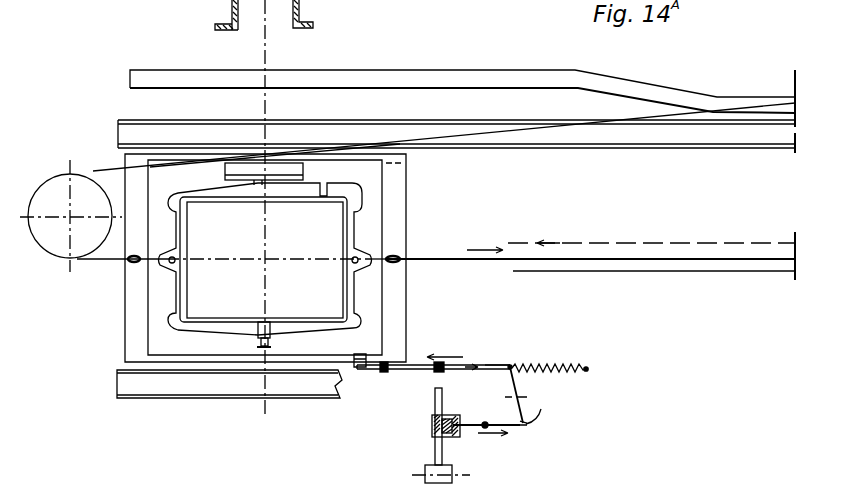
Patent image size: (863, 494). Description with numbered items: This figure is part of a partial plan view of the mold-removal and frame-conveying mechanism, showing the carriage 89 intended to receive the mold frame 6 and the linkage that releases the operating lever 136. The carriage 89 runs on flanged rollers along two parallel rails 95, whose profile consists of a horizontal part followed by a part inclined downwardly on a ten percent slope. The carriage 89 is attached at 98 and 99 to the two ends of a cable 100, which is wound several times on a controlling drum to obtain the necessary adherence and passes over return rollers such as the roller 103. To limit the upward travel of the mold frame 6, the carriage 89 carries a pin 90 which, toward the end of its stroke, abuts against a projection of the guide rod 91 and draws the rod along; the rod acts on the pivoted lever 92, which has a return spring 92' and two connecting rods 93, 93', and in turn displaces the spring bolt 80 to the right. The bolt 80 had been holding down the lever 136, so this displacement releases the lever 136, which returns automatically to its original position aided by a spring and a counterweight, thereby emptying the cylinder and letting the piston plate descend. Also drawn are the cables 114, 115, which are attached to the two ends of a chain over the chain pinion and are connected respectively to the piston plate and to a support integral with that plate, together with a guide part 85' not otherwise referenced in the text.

The mold frame 6 is at (186, 225).
The spring bolt 80 is at (473, 428).
The guide bracket 85' is at (174, 4).
The carriage 89 is at (400, 175).
The pin 90 is at (363, 354).
The guide rod 91 is at (372, 369).
The pivoted lever 92 is at (553, 395).
The return spring 92' is at (550, 344).
The connecting rod 93 is at (541, 445).
The connecting rod 93' is at (503, 340).
The rails 95 is at (127, 128).
The cable attachment point 98 is at (395, 257).
The cable attachment point 99 is at (128, 261).
The cable 100 is at (97, 169).
The return roller 103 is at (52, 193).
The cable 114 is at (686, 243).
The cable 115 is at (688, 272).
The lever 136 is at (437, 453).